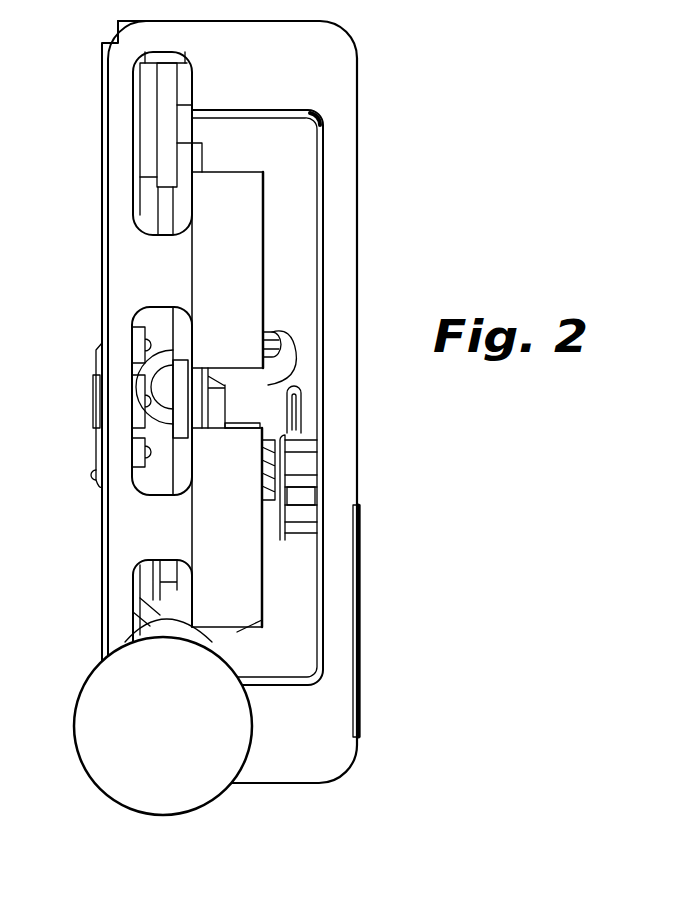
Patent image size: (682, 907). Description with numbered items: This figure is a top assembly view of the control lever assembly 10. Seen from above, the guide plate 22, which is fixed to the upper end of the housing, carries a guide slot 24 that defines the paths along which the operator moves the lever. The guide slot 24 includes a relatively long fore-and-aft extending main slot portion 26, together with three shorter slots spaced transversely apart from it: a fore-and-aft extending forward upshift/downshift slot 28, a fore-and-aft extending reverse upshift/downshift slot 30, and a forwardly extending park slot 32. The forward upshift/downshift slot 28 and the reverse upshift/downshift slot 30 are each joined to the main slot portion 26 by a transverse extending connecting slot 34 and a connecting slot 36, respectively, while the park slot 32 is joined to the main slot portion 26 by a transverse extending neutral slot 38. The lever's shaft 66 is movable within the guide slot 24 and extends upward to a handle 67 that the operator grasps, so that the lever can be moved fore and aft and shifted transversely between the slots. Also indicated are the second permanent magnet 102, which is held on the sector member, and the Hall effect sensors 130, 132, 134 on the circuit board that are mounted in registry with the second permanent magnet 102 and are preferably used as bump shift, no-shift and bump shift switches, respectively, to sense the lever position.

The control lever assembly 10 is at (372, 207).
The guide plate 22 is at (355, 97).
The guide slot 24 is at (281, 113).
The main slot portion 26 is at (320, 233).
The forward upshift/downshift slot 28 is at (140, 100).
The reverse upshift/downshift slot 30 is at (155, 306).
The park slot 32 is at (133, 568).
The connecting slot 34 is at (210, 118).
The connecting slot 36 is at (292, 360).
The neutral slot 38 is at (212, 622).
The shaft 66 is at (178, 560).
The handle 67 is at (213, 801).
The second permanent magnet 102 is at (178, 340).
The Hall effect sensor 130 is at (140, 333).
The Hall effect sensor 132 is at (137, 378).
The Hall effect sensor 134 is at (137, 443).